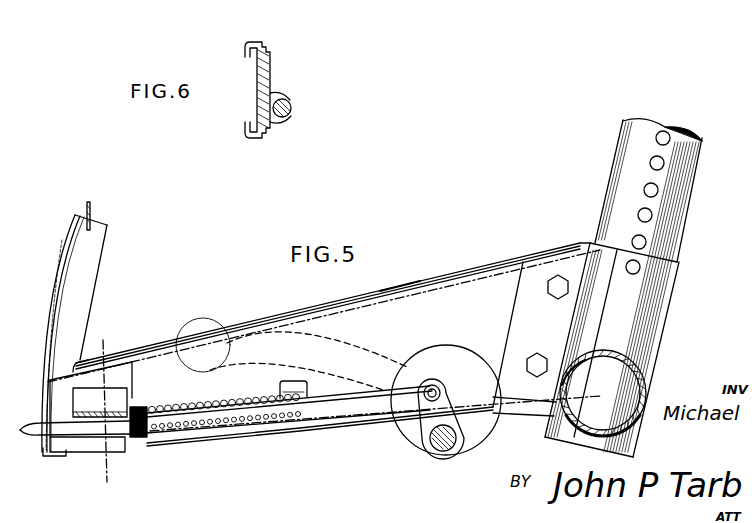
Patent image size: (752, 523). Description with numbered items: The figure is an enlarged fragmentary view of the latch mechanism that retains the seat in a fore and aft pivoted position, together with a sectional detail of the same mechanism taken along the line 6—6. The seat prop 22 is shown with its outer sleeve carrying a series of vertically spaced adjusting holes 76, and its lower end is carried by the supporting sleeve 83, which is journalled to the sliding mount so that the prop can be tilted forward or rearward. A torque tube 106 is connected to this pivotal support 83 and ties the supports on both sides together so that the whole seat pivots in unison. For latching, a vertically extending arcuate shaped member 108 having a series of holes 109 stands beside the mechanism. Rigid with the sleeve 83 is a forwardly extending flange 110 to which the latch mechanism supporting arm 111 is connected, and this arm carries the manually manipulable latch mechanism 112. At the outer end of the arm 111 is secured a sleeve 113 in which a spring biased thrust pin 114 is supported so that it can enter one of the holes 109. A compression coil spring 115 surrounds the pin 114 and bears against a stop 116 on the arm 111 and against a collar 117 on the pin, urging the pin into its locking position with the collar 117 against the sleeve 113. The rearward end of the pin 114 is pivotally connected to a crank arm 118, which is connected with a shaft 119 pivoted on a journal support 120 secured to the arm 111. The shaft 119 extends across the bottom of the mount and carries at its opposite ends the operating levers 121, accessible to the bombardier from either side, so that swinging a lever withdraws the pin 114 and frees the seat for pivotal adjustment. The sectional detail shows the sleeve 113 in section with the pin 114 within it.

In FIG. 5, the section line 6— 6 is at (105, 411).
In FIG. 5, the seat prop 22 is at (686, 197).
In FIG. 5, the adjusting holes 76 is at (643, 189).
In FIG. 5, the supporting sleeve 83 is at (664, 314).
In FIG. 5, the torque tube 106 is at (625, 385).
In FIG. 5, the arcuate shaped member 108 is at (76, 223).
In FIG. 5, the holes 109 is at (66, 262).
In FIG. 5, the forwardly extending flange 110 is at (548, 251).
In FIG. 6, the latch mechanism supporting arm 111 is at (256, 42).
In FIG. 5, the latch mechanism supporting arm 111 is at (402, 287).
In FIG. 5, the latch mechanism 112 is at (327, 395).
In FIG. 6, the sleeve 113 is at (280, 98).
In FIG. 5, the sleeve 113 is at (97, 440).
In FIG. 6, the thrust pin 114 is at (292, 109).
In FIG. 5, the thrust pin 114 is at (178, 406).
In FIG. 5, the compression coil spring 115 is at (219, 403).
In FIG. 5, the stop 116 is at (288, 385).
In FIG. 5, the collar 117 is at (140, 407).
In FIG. 5, the crank arm 118 is at (435, 385).
In FIG. 5, the shaft 119 is at (441, 448).
In FIG. 5, the journal support 120 is at (486, 356).
In FIG. 5, the operating levers 121 is at (328, 333).